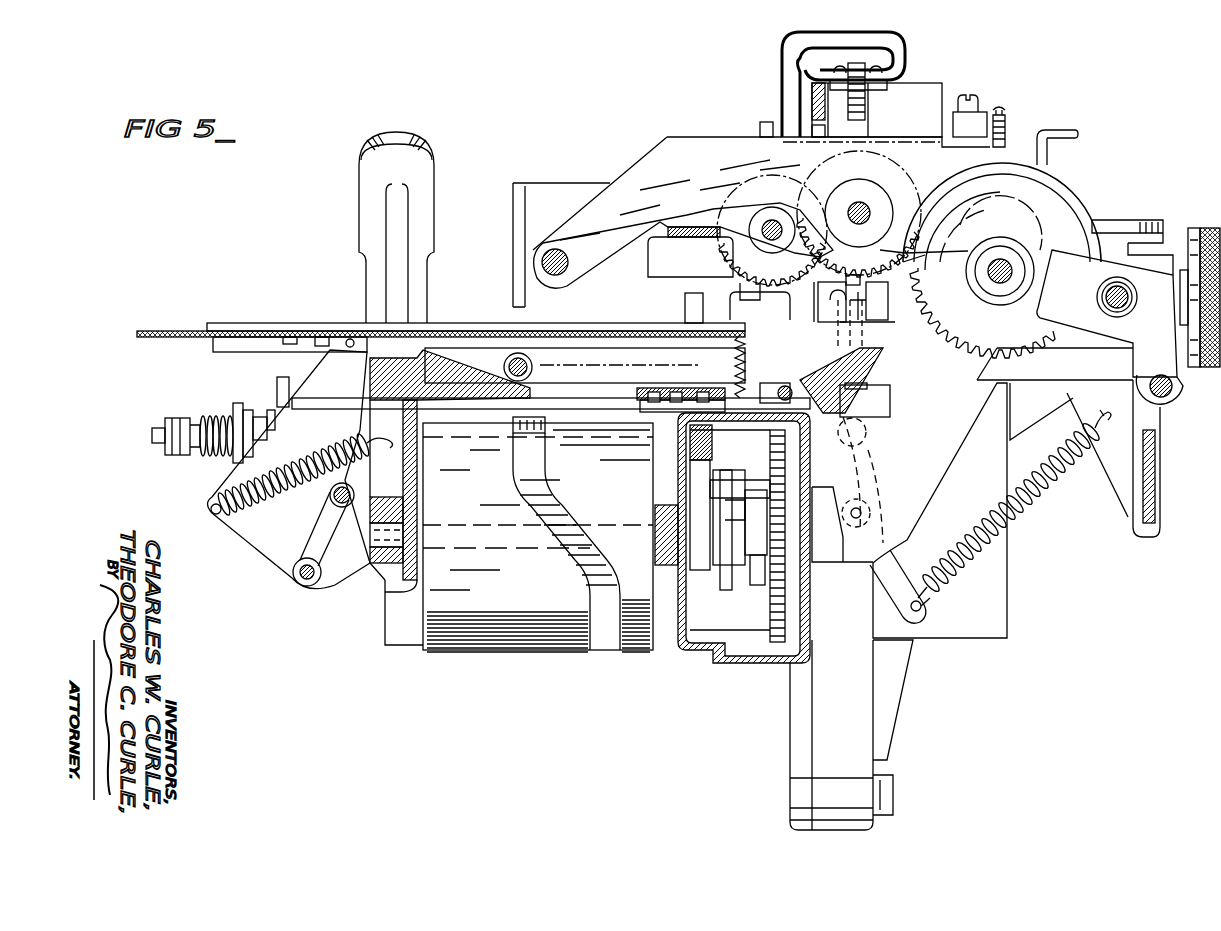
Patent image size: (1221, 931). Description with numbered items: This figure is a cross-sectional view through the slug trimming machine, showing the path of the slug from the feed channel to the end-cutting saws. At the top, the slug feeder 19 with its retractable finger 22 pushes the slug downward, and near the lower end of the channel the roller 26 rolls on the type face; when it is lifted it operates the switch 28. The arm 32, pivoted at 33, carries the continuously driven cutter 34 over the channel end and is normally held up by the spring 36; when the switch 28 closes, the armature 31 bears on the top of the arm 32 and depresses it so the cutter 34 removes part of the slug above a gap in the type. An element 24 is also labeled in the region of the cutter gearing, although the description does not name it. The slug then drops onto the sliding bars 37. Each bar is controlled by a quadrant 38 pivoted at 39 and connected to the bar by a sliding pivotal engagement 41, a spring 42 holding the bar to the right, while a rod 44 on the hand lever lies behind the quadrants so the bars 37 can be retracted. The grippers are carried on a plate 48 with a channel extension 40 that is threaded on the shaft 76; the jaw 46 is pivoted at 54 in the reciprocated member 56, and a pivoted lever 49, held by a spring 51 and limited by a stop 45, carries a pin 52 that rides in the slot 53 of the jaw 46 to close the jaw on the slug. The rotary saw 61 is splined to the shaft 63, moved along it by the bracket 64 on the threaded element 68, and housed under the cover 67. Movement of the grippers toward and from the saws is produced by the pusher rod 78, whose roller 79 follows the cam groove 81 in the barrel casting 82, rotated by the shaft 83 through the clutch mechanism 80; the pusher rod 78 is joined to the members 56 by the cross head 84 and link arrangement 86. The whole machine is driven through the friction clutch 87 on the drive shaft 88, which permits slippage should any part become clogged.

The slug feeder 19 is at (850, 320).
The retractable finger 22 is at (862, 310).
The shaft 24 is at (905, 262).
The roller 26 is at (860, 270).
The switch 28 is at (856, 72).
The armature 31 is at (766, 122).
The arm 32 is at (733, 148).
The pivot 33 is at (568, 258).
The cutter 34 is at (955, 215).
The spring 36 is at (1008, 135).
The sliding bars 37 is at (280, 326).
The quadrant 38 is at (258, 540).
The pivot 39 is at (307, 586).
The channel extension 40 is at (1028, 385).
The sliding pivotal engagement 41 is at (345, 344).
The spring 42 is at (290, 540).
The rod 44 is at (335, 499).
The stop 45 is at (864, 513).
The jaw 46 is at (846, 400).
The plate 48 is at (950, 435).
The pivoted lever 49 is at (928, 606).
The spring 51 is at (1040, 498).
The pin 52 is at (867, 388).
The slot 53 is at (862, 444).
The pivot 54 is at (846, 341).
The reciprocated member 56 is at (682, 382).
The rotary saw 61 is at (967, 304).
The shaft 63 is at (1010, 262).
The bracket 64 is at (1120, 272).
The saw cover 67 is at (1040, 192).
The threaded element 68 is at (1140, 312).
The threaded shaft 76 is at (585, 365).
The pusher rod 78 is at (325, 406).
The roller 79 is at (520, 430).
The clutch mechanism 80 is at (734, 583).
The cam groove 81 is at (606, 642).
The barrel casting 82 is at (563, 630).
The shaft 83 is at (398, 535).
The cross head 84 is at (641, 393).
The link arrangement 86 is at (757, 386).
The friction clutch 87 is at (275, 385).
The drive shaft 88 is at (175, 420).